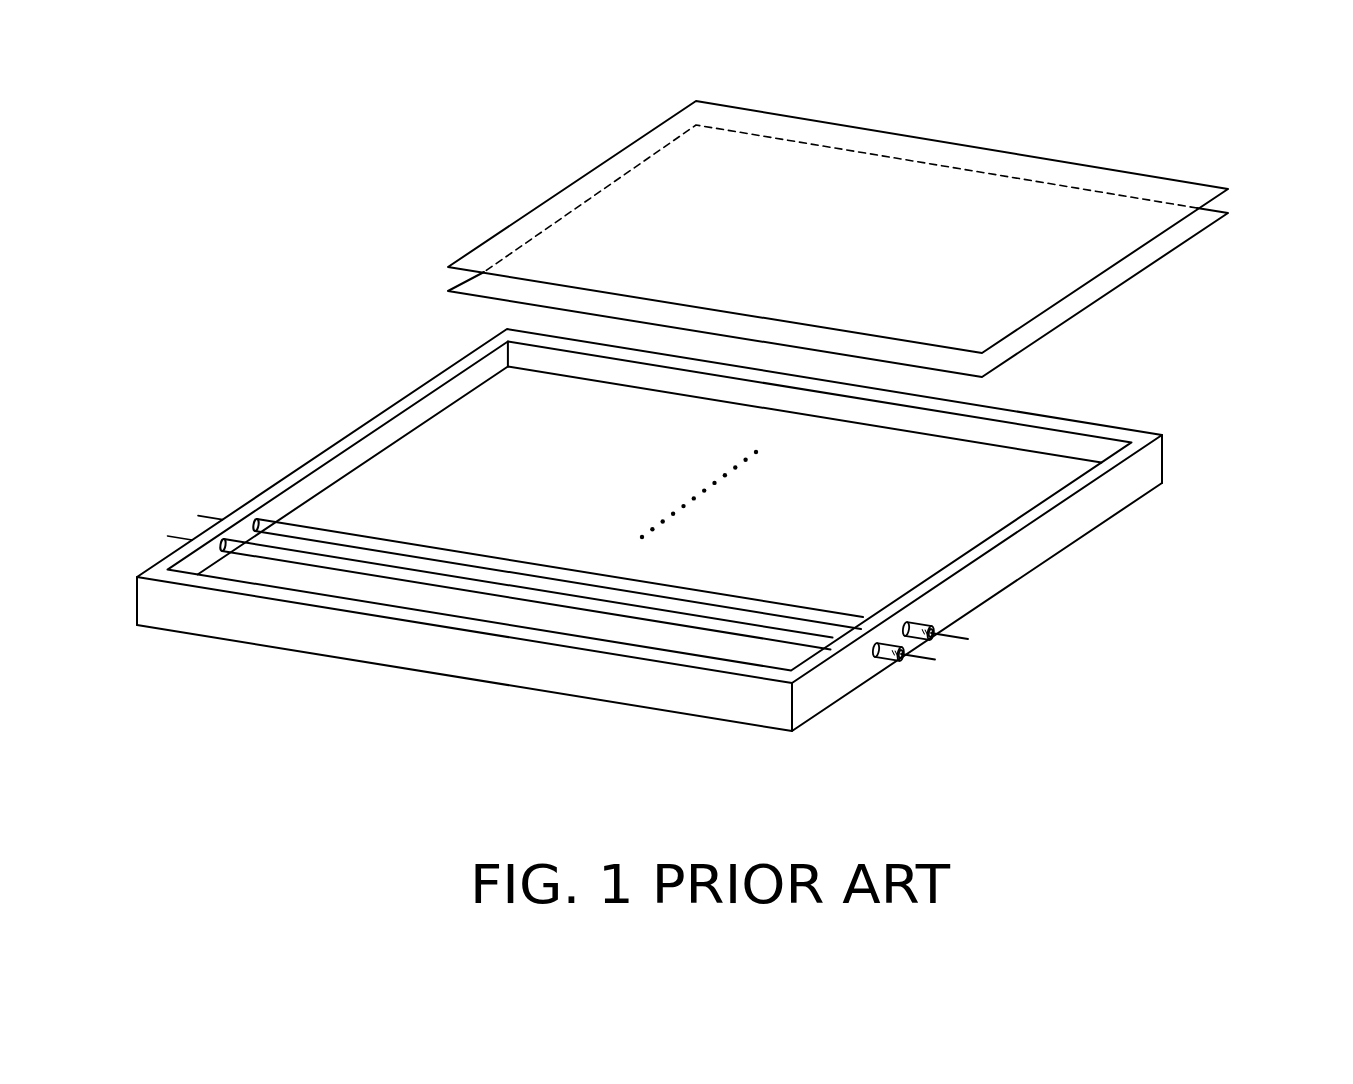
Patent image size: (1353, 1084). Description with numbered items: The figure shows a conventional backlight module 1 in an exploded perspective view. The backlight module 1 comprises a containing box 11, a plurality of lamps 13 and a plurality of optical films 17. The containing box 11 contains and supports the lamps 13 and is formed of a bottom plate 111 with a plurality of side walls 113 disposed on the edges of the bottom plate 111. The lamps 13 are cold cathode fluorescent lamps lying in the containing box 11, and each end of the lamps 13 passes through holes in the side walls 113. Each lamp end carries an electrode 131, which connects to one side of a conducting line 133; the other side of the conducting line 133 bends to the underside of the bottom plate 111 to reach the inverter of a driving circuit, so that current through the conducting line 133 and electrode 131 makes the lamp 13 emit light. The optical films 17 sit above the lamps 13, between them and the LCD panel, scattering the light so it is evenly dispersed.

The backlight module 1 is at (305, 167).
The containing box 11 is at (193, 348).
The bottom plate 111 is at (432, 475).
The side wall 113 is at (355, 458).
The lamp 13 is at (405, 572).
The electrode 131 is at (888, 652).
The conducting line 133 is at (940, 657).
The optical film 17 is at (1243, 173).